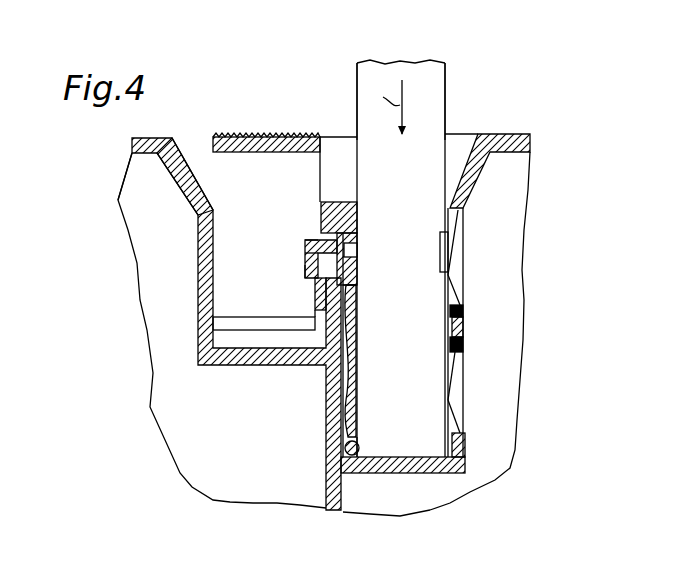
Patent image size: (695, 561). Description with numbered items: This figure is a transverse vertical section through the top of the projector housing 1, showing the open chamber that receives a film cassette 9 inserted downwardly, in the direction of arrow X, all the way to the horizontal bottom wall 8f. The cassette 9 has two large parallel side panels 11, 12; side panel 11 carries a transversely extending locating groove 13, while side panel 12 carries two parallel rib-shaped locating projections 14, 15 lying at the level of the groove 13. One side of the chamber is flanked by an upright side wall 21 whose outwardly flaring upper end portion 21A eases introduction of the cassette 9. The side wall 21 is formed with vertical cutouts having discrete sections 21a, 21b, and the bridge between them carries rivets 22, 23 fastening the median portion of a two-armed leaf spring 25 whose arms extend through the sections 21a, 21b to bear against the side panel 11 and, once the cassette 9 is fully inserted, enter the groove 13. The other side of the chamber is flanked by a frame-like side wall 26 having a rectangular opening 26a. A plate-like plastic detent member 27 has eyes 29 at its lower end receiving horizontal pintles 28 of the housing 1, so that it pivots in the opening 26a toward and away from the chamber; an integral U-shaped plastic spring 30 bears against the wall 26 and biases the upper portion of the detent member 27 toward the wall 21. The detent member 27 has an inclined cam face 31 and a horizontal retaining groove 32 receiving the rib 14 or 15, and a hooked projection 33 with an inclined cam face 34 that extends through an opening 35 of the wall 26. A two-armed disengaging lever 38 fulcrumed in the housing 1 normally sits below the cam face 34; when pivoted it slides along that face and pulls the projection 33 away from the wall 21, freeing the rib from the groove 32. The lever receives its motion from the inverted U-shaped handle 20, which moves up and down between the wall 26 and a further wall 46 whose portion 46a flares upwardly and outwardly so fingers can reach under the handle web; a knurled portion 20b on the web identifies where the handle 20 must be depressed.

The housing 1 is at (146, 350).
The bottom wall 8f is at (400, 473).
The cassette 9 is at (447, 82).
The side panel 11 is at (446, 100).
The side panel 12 is at (357, 100).
The locating groove 13 is at (443, 232).
The rib-shaped projection 14 is at (358, 236).
The rib-shaped projection 15 is at (357, 250).
The handle 20 is at (232, 137).
The knurled portion 20b is at (285, 137).
The side wall 21 is at (468, 333).
The upper end portion 21A is at (490, 183).
The cutout section 21a is at (463, 262).
The cutout section 21b is at (462, 388).
The rivet 22 is at (465, 313).
The rivet 23 is at (465, 343).
The leaf spring 25 is at (462, 415).
The frame-like side wall 26 is at (324, 217).
The opening 26a is at (315, 313).
The detent member 27 is at (341, 432).
The pintle 28 is at (345, 447).
The eye 29 is at (359, 447).
The plastic spring 30 is at (353, 338).
The cam face 31 is at (318, 246).
The retaining groove 32 is at (305, 258).
The hooked projection 33 is at (310, 248).
The cam face 34 is at (302, 270).
The opening 35 is at (357, 278).
The disengaging lever 38 is at (316, 292).
The wall 46 is at (206, 302).
The flaring portion 46a is at (188, 190).